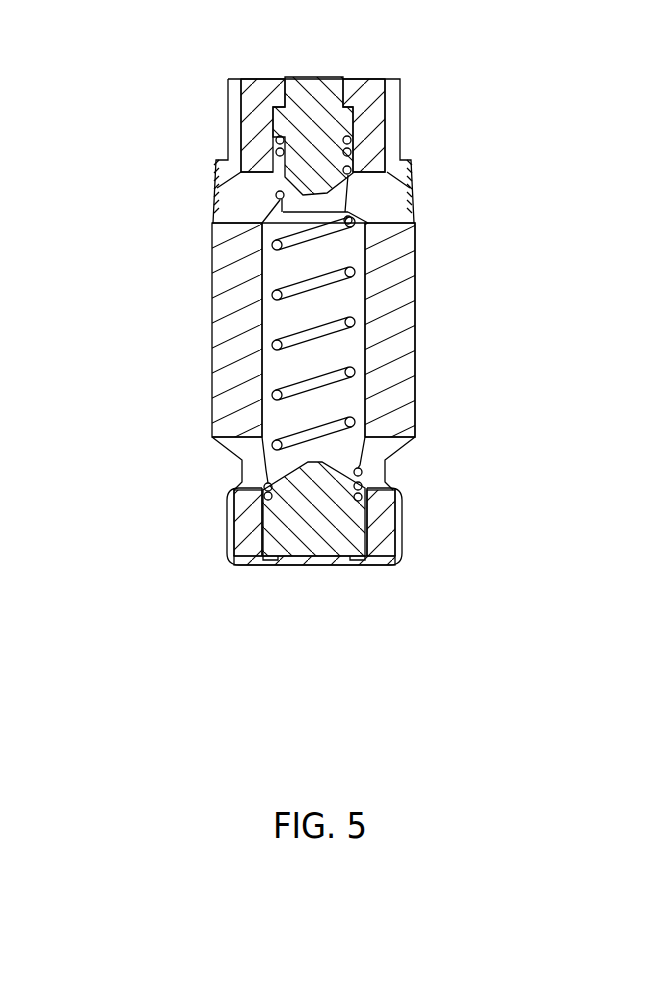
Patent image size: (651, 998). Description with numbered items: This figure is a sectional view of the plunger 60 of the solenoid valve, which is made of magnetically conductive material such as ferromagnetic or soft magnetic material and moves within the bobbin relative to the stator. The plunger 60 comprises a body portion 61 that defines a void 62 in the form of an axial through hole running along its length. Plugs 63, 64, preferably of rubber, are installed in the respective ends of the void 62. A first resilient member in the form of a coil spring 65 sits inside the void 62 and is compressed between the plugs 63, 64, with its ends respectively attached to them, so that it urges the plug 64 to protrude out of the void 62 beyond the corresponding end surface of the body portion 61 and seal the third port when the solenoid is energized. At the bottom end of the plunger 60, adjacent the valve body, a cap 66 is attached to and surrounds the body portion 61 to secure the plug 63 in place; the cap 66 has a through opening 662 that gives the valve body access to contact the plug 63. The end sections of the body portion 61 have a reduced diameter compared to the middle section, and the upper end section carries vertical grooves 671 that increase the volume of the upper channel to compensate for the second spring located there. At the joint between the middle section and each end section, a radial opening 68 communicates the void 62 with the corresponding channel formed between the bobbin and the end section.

The plunger 60 is at (152, 90).
The body portion 61 is at (388, 293).
The void 62 is at (283, 317).
The plug 63 is at (320, 527).
The plug 64 is at (318, 128).
The coil spring 65 is at (327, 330).
The cap 66 is at (405, 548).
The radial opening 68 is at (240, 207).
The vertical grooves 671 is at (353, 128).
The through opening 662 is at (310, 565).